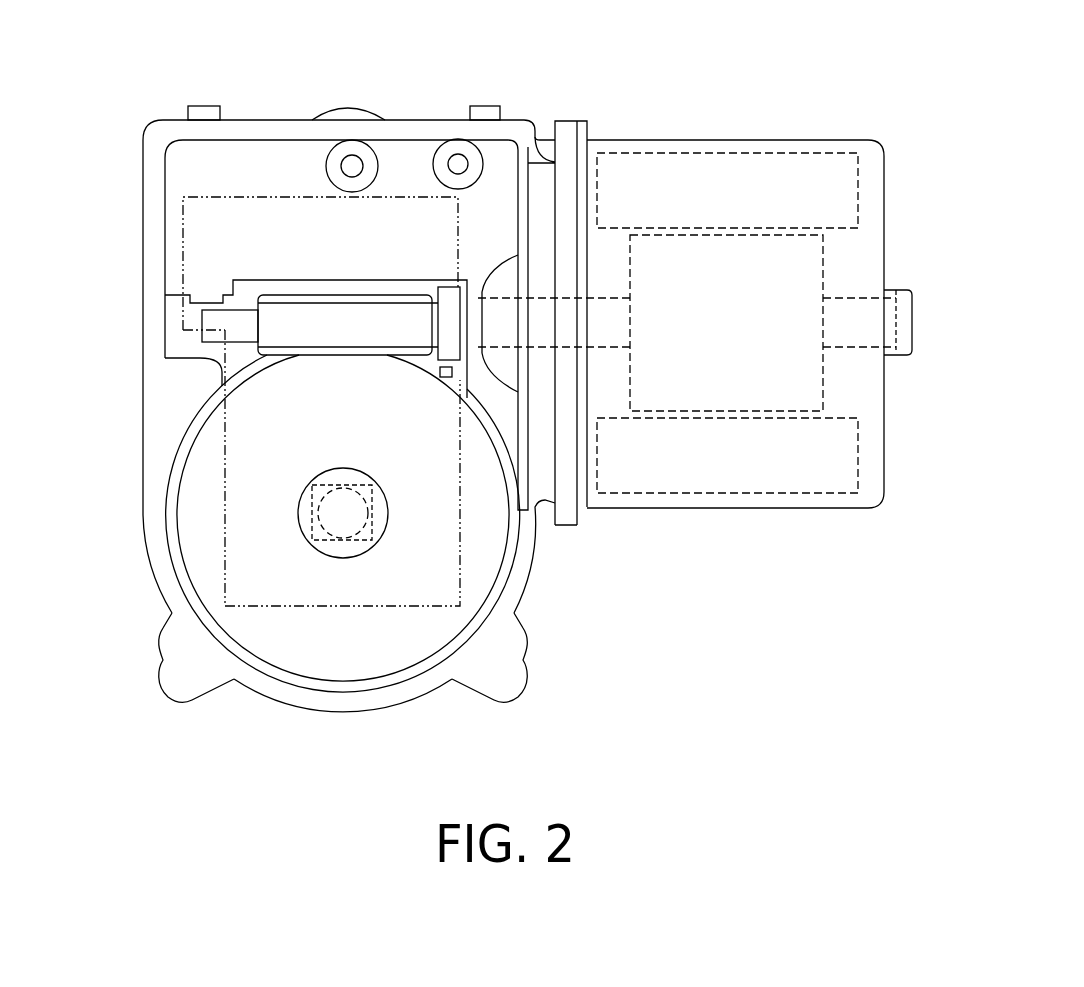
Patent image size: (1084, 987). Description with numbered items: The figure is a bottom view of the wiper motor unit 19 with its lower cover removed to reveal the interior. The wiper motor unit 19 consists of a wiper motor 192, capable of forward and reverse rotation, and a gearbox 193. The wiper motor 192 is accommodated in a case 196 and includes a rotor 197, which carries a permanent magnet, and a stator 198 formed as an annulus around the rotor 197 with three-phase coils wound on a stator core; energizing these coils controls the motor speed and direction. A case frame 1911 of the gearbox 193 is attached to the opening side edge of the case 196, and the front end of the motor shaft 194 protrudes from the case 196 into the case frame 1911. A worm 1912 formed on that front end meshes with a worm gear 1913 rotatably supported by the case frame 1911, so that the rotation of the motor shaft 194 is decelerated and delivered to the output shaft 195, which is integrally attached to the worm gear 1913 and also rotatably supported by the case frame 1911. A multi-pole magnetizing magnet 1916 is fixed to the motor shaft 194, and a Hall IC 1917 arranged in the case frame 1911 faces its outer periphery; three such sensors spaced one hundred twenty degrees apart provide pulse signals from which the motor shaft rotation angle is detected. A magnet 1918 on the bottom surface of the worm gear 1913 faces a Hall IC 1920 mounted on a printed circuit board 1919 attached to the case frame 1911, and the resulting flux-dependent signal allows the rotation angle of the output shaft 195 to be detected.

The wiper motor unit 19 is at (682, 53).
The wiper motor 192 is at (797, 130).
The gearbox 193 is at (400, 104).
The motor shaft 194 is at (606, 312).
The output shaft 195 is at (347, 548).
The case 196 is at (874, 393).
The rotor 197 is at (780, 272).
The stator 198 is at (832, 470).
The case frame 1911 is at (152, 250).
The worm 1912 is at (300, 280).
The worm gear 1913 is at (488, 553).
The multi-pole magnetizing magnet 1916 is at (448, 286).
The Hall IC 1917 is at (445, 378).
The magnet for detecting output shaft rotation 1918 is at (300, 514).
The printed circuit board 1919 is at (251, 197).
The Hall IC 1920 is at (375, 538).